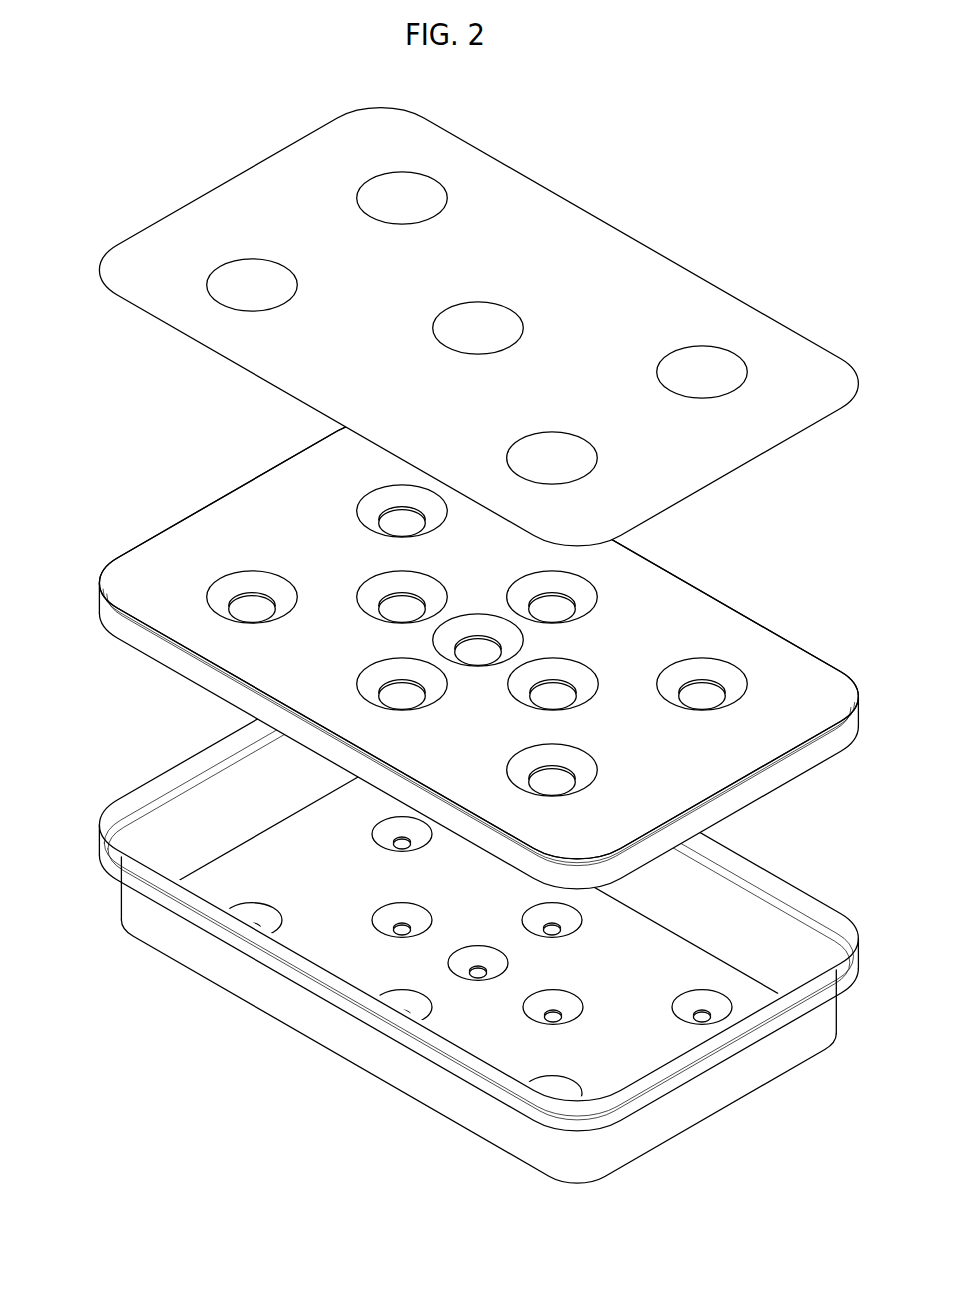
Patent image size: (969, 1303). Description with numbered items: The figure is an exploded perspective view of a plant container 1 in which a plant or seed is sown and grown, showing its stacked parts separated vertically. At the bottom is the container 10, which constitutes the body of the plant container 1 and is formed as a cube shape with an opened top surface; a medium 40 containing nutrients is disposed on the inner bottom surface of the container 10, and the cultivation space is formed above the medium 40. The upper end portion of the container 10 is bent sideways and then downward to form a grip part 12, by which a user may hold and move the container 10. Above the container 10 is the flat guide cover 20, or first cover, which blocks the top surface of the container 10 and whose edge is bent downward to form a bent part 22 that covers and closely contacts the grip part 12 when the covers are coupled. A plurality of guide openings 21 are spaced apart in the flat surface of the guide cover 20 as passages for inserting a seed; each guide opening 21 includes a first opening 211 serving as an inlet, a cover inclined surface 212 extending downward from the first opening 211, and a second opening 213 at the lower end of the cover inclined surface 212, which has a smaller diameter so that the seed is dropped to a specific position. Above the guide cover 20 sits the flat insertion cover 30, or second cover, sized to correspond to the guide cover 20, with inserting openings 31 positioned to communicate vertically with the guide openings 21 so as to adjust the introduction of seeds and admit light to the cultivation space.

The plant container 1 is at (109, 84).
The container 10 is at (451, 923).
The grip part 12 is at (328, 990).
The guide cover 20 is at (446, 633).
The guide opening 21 is at (440, 586).
The first opening 211 is at (270, 572).
The cover inclined surface 212 is at (247, 583).
The second opening 213 is at (228, 610).
The bent part 22 is at (124, 628).
The insertion cover 30 is at (472, 327).
The inserting opening 31 is at (234, 259).
The medium 40 is at (478, 962).